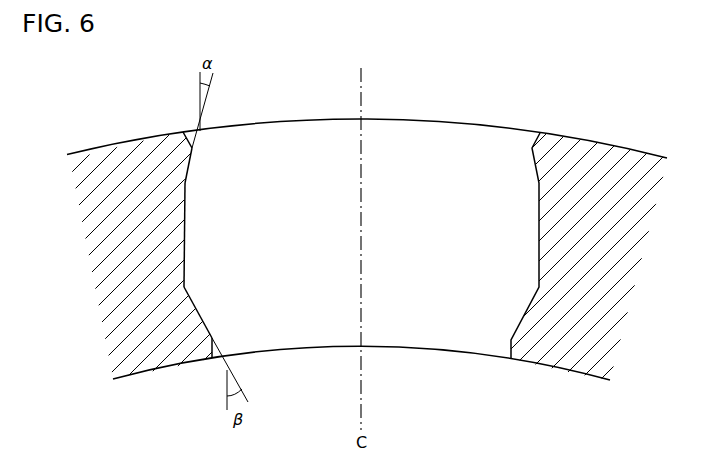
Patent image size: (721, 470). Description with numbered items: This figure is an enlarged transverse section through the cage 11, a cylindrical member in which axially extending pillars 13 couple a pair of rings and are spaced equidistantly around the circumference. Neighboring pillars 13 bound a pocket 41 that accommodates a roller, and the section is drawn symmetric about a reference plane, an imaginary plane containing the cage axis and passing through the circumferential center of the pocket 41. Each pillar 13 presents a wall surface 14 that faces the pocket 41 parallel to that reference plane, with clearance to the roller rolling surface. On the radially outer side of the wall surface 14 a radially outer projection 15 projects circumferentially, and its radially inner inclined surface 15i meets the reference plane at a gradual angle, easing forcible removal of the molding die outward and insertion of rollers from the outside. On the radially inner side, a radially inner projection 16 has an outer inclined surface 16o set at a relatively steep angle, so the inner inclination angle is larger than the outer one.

The cage 11 is at (502, 127).
The pillar 13 is at (112, 162).
The wall surface 14 is at (185, 225).
The radially outer projection 15 is at (193, 148).
The inclined surface 15i is at (188, 168).
The radially inner projection 16 is at (210, 340).
The inclined surface 16o is at (200, 312).
The pocket 41 is at (378, 277).